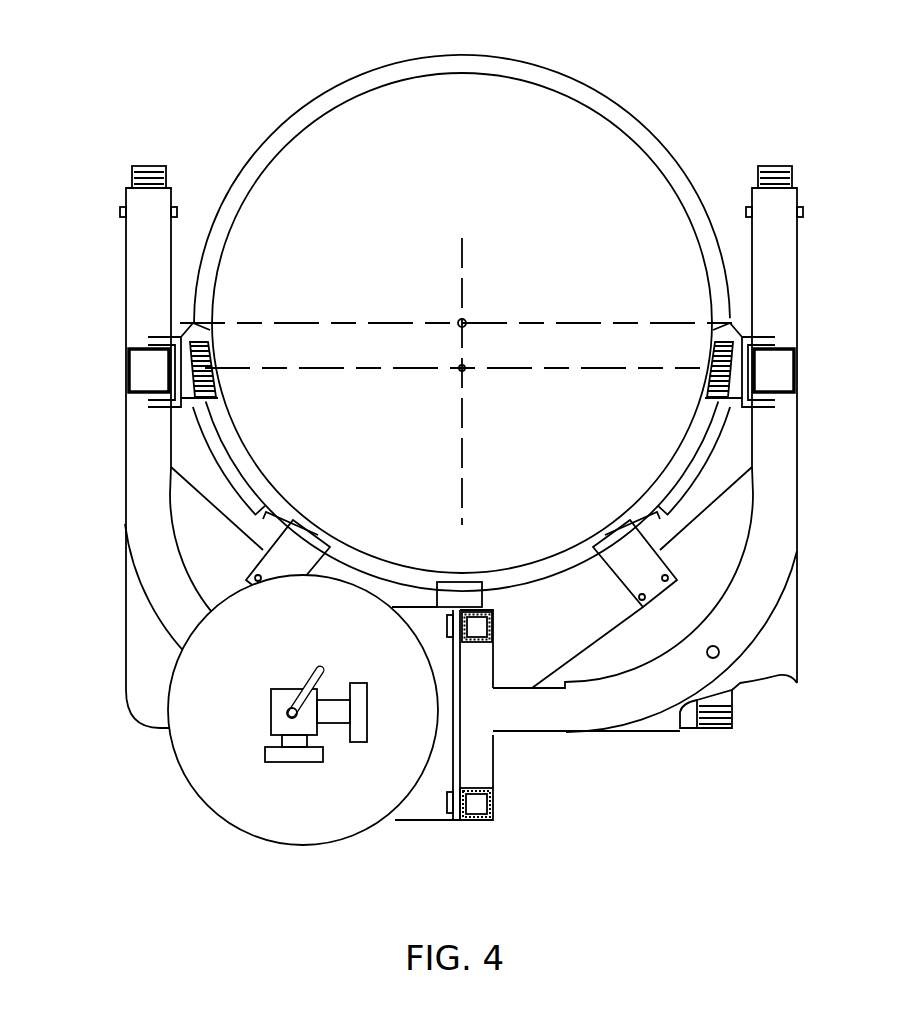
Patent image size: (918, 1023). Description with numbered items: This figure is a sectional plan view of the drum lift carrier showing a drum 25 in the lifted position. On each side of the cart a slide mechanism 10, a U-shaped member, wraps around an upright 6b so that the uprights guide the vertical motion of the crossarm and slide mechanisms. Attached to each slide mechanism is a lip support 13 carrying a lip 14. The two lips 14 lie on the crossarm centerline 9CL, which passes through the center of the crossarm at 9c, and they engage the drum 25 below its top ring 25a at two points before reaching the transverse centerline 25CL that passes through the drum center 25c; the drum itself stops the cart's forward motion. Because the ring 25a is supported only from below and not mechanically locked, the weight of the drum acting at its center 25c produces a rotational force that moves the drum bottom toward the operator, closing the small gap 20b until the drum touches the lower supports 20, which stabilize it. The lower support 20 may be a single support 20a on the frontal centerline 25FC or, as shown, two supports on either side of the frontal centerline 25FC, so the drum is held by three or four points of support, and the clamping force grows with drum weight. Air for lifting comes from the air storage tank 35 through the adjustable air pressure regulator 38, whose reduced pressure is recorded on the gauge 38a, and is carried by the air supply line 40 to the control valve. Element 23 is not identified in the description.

The upright 6b is at (780, 392).
The center of the crossarm 9c is at (467, 372).
The crossarm centerline 9CL is at (345, 372).
The slide mechanism 10 is at (763, 337).
The lip support 13 is at (730, 403).
The lip 14 is at (705, 383).
The lower support 20 is at (650, 542).
The single support 20a is at (482, 598).
The gap 20b is at (608, 532).
The mounting post 23 is at (147, 165).
The drum 25 is at (463, 74).
The top ring 25a is at (613, 100).
The drum center 25c is at (467, 320).
The transverse centerline 25CL is at (370, 320).
The frontal centerline 25FC is at (468, 498).
The air storage tank 35 is at (363, 827).
The adjustable air pressure regulator 38 is at (320, 730).
The gauge 38a is at (295, 763).
The air supply line 40 is at (305, 673).